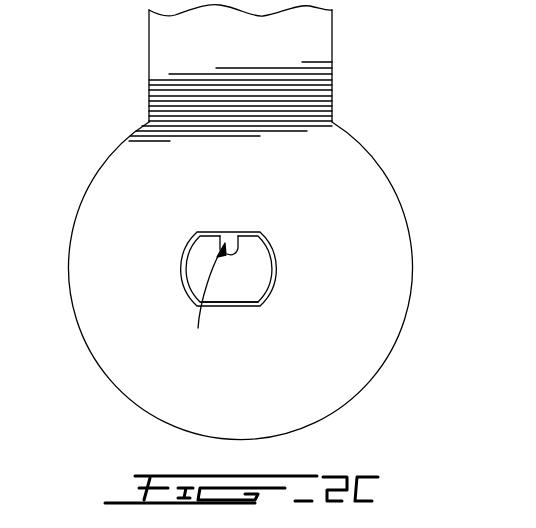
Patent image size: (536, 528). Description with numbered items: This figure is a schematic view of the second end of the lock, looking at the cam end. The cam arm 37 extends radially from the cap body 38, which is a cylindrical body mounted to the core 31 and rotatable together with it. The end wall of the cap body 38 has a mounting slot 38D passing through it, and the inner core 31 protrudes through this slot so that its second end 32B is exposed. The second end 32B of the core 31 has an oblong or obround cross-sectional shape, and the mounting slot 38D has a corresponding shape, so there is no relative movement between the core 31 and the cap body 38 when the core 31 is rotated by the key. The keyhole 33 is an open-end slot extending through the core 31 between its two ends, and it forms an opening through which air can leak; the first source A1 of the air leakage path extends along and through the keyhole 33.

The cam arm 37 is at (333, 75).
The cap body 38 is at (327, 417).
The mounting slot 38D is at (278, 260).
The second end 32B is at (273, 290).
The keyhole 33 is at (233, 240).
The inner core 31 is at (242, 283).
The first source of the air leakage path A1 is at (198, 315).